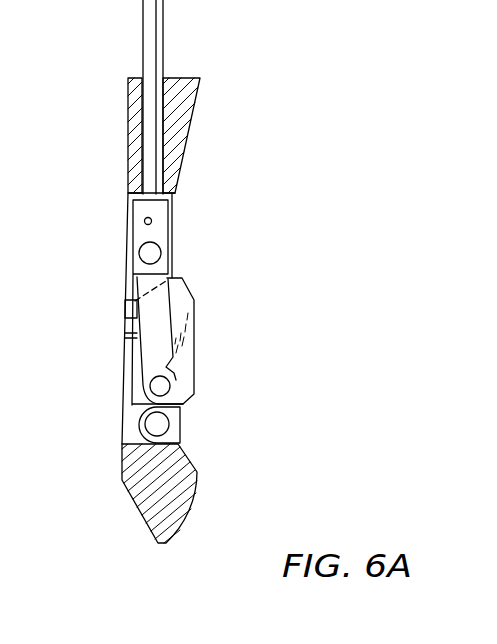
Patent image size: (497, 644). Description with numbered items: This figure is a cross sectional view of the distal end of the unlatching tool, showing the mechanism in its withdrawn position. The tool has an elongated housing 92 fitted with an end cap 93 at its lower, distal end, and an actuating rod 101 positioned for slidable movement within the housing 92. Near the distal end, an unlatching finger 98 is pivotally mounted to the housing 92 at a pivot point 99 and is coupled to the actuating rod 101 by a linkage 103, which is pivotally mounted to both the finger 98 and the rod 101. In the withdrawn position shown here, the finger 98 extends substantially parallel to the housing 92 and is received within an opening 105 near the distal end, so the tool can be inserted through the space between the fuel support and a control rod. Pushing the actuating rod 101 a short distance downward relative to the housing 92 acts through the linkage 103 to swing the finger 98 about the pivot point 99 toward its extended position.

The actuating rod 101 is at (143, 59).
The housing 92 is at (190, 128).
The end cap 93 is at (141, 488).
The unlatching finger 98 is at (139, 420).
The pivot point 99 is at (157, 424).
The linkage 103 is at (145, 351).
The opening 105 is at (208, 303).